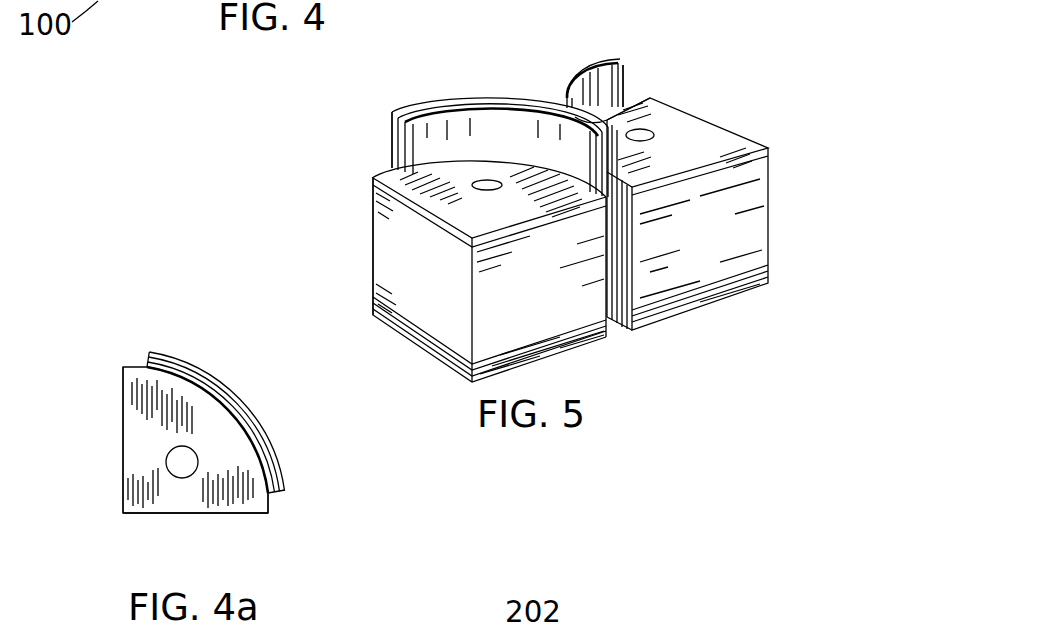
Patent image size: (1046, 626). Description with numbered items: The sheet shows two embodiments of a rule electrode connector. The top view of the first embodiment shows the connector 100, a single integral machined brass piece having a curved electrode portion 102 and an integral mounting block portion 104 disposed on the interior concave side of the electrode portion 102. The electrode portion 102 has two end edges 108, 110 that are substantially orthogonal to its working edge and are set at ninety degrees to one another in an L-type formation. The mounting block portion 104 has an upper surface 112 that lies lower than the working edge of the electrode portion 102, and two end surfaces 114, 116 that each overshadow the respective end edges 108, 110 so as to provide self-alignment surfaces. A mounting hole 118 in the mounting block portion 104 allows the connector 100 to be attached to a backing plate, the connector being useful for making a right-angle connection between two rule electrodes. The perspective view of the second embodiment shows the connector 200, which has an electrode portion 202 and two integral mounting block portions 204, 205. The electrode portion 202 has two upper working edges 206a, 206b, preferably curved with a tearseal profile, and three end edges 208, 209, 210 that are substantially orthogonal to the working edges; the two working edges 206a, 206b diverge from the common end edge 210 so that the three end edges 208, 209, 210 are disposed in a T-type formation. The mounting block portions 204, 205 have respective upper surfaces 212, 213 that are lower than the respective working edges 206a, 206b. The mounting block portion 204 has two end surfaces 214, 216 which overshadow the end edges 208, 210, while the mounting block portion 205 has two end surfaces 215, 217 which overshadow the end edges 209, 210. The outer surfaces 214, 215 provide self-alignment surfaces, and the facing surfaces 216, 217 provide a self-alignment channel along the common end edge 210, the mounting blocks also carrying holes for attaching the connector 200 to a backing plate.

In FIG. 4a, the connector 100 is at (110, 446).
In FIG. 4a, the electrode portion 102 is at (257, 412).
In FIG. 4a, the mounting block portion 104 is at (175, 513).
In FIG. 4a, the end edge 108 is at (146, 355).
In FIG. 4a, the end edge 110 is at (272, 501).
In FIG. 4a, the upper surface 112 is at (187, 492).
In FIG. 4a, the end surface 114 is at (130, 364).
In FIG. 4a, the end surface 116 is at (272, 506).
In FIG. 4a, the mounting hole 118 is at (182, 462).
In FIG. 5, the connector 200 is at (434, 382).
In FIG. 5, the electrode portion 202 is at (475, 135).
In FIG. 5, the mounting block portion 204 is at (557, 302).
In FIG. 5, the mounting block portion 205 is at (737, 240).
In FIG. 5, the upper working edge 206a is at (487, 97).
In FIG. 5, the upper working edge 206b is at (577, 95).
In FIG. 5, the end edge 208 is at (390, 147).
In FIG. 5, the end edge 209 is at (625, 82).
In FIG. 5, the common end edge 210 is at (596, 172).
In FIG. 5, the upper surface 212 is at (509, 220).
In FIG. 5, the upper surface 213 is at (716, 158).
In FIG. 5, the end surface 214 is at (372, 262).
In FIG. 5, the end surface 215 is at (642, 100).
In FIG. 5, the end surface 216 is at (614, 318).
In FIG. 5, the end surface 217 is at (625, 277).